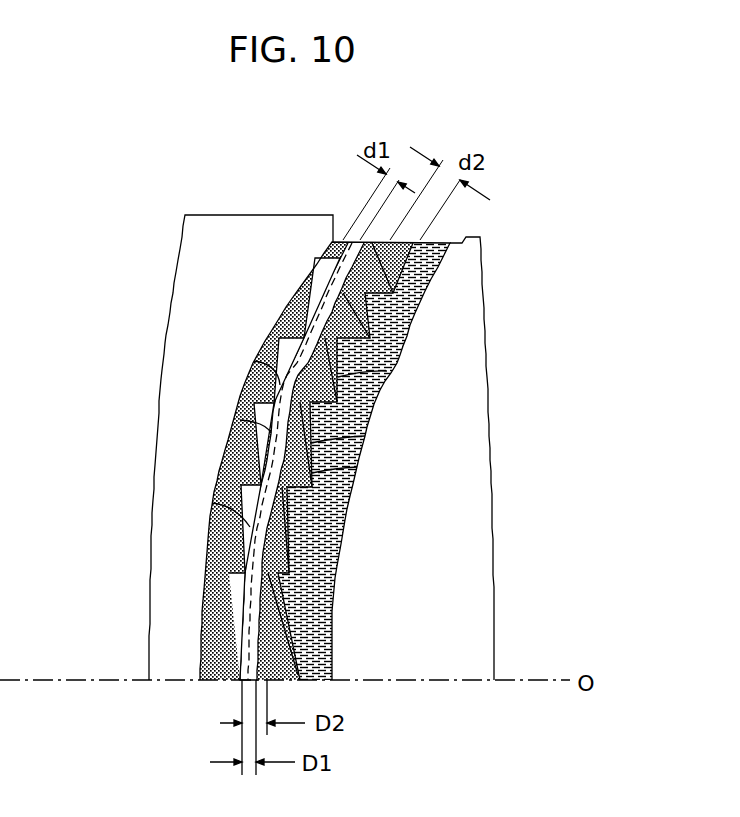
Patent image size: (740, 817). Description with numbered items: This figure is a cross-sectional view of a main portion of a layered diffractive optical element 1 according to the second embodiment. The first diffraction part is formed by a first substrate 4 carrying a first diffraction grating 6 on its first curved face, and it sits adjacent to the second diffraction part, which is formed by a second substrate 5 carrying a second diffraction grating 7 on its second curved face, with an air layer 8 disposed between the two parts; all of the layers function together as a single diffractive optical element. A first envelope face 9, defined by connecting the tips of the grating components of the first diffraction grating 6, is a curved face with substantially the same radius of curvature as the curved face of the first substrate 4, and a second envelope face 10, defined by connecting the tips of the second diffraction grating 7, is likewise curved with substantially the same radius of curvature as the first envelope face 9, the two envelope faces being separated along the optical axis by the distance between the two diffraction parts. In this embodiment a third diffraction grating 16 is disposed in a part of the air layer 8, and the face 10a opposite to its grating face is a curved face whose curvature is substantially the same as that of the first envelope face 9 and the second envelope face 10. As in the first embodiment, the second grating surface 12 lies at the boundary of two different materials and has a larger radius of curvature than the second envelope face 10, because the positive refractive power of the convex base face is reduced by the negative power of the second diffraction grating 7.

The diffractive optical element 1 is at (534, 183).
The first substrate 4 is at (190, 312).
The second substrate 5 is at (470, 417).
The first diffraction grating 6 is at (280, 315).
The second diffraction grating 7 is at (408, 298).
The air layer 8 is at (318, 300).
The first envelope face 9 is at (254, 361).
The second envelope face 10 is at (387, 371).
The face opposite to a grating face of the third diffraction grating 10a is at (240, 420).
The second grating surface 12 is at (365, 436).
The third diffraction grating 16 is at (357, 467).